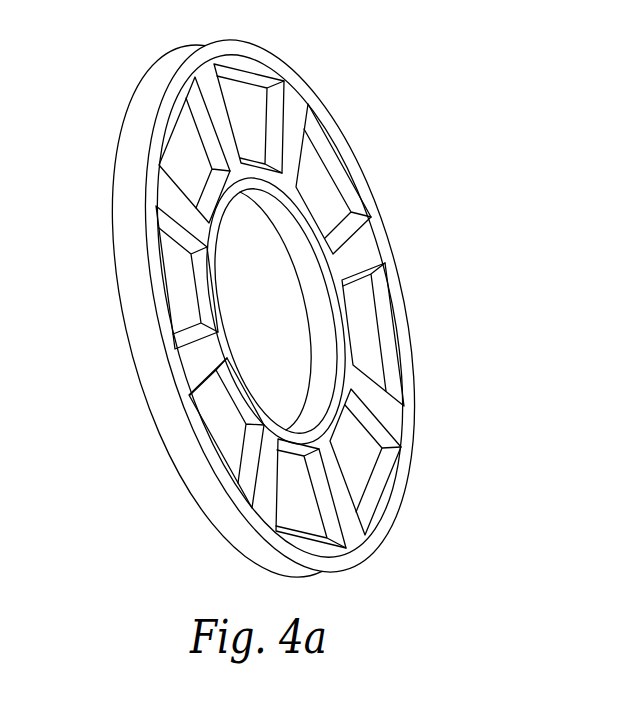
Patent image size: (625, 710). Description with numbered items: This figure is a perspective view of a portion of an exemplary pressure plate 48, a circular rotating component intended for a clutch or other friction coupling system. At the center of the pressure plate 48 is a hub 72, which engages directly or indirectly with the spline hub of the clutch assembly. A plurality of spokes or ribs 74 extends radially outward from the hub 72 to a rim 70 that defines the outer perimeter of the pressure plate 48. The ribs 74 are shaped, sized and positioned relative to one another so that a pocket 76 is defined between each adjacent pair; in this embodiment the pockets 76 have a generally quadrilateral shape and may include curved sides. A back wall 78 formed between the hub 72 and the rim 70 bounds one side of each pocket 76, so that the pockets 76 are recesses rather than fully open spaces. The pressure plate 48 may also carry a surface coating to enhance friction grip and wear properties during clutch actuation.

The pressure plate 48 is at (277, 306).
The rim 70 is at (162, 404).
The hub 72 is at (307, 309).
The spokes or ribs 74 is at (165, 189).
The pocket 76 is at (324, 177).
The back wall 78 is at (180, 107).